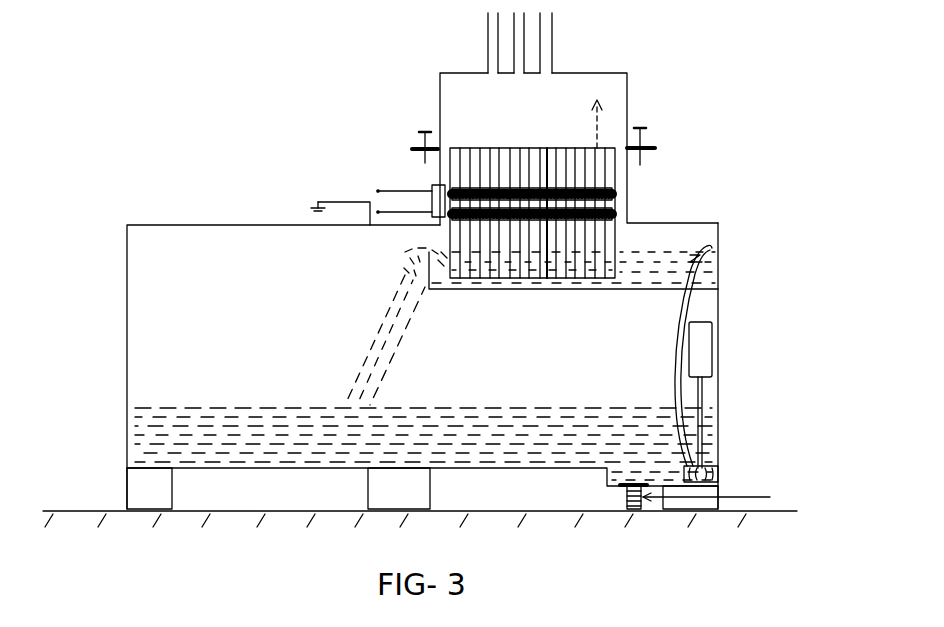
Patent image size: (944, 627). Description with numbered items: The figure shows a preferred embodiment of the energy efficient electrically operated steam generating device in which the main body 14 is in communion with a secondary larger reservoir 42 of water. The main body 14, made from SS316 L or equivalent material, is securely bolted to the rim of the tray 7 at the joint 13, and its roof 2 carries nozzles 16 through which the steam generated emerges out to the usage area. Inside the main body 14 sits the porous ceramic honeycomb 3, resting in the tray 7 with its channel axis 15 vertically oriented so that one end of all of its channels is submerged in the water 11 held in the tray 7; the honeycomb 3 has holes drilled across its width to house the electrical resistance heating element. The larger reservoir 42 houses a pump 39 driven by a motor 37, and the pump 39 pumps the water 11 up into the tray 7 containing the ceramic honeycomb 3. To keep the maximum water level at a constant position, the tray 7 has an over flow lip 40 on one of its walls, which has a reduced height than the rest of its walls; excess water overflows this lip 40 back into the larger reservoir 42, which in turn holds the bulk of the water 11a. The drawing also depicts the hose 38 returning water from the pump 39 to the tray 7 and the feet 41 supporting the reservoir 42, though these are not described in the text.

The roof 2 is at (609, 137).
The ceramic honeycomb 3 is at (752, 174).
The tray 7 is at (418, 287).
The water 11 is at (610, 280).
The bulk of the water 11a is at (185, 438).
The joint 13 is at (410, 150).
The main body 14 is at (636, 209).
The channel axis 15 is at (606, 105).
The nozzles 16 is at (557, 33).
The motor 37 is at (700, 350).
The hose 38 is at (713, 247).
The pump 39 is at (722, 470).
The over flow lip 40 is at (417, 260).
The feet 41 is at (125, 488).
The larger reservoir 42 is at (126, 388).